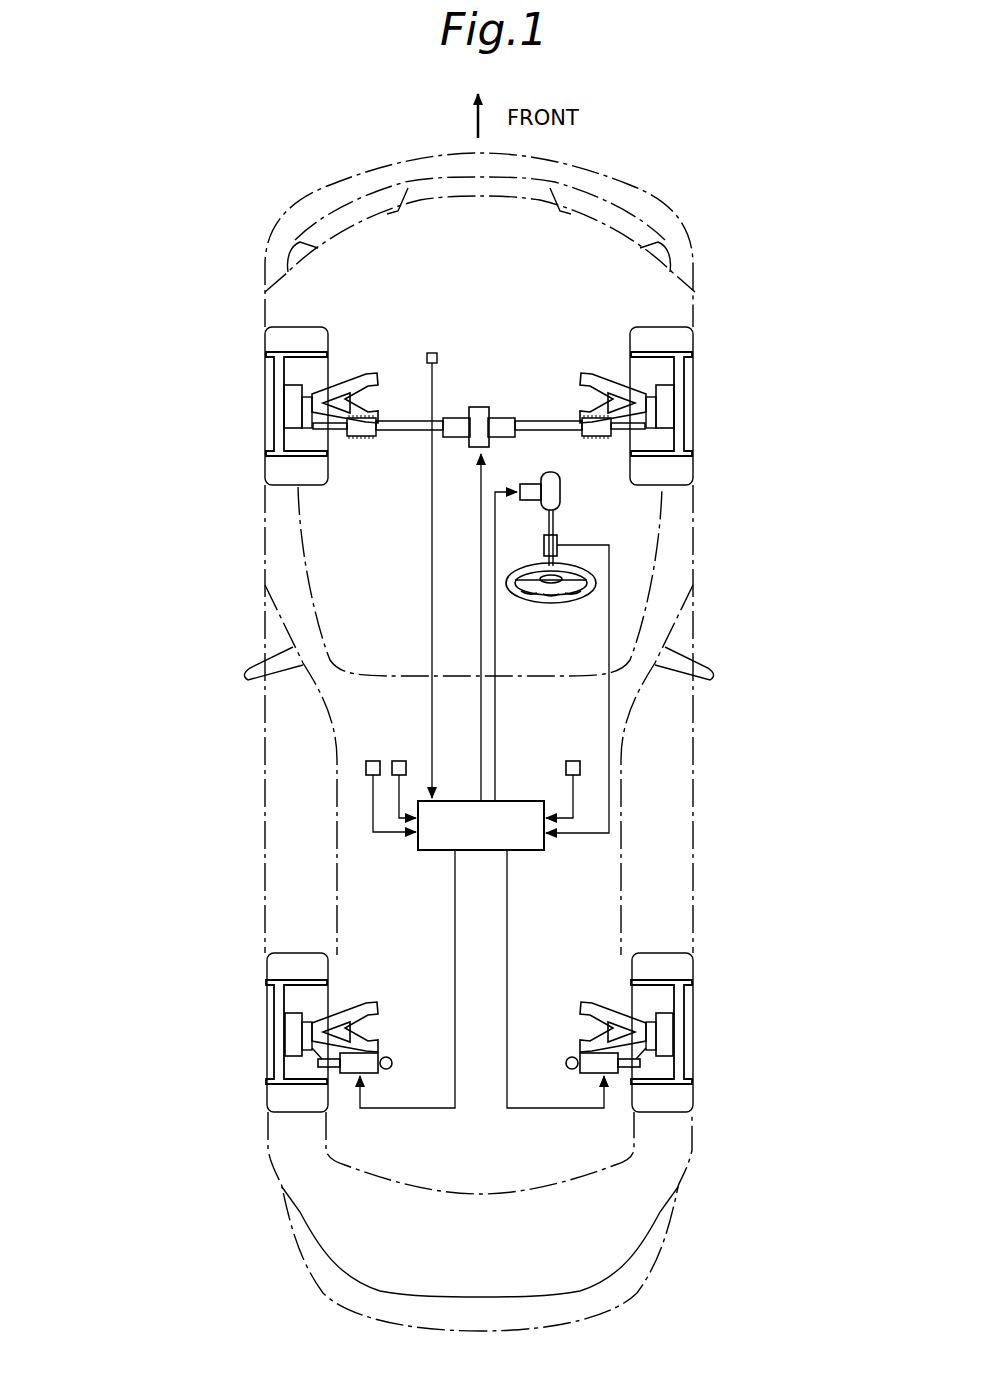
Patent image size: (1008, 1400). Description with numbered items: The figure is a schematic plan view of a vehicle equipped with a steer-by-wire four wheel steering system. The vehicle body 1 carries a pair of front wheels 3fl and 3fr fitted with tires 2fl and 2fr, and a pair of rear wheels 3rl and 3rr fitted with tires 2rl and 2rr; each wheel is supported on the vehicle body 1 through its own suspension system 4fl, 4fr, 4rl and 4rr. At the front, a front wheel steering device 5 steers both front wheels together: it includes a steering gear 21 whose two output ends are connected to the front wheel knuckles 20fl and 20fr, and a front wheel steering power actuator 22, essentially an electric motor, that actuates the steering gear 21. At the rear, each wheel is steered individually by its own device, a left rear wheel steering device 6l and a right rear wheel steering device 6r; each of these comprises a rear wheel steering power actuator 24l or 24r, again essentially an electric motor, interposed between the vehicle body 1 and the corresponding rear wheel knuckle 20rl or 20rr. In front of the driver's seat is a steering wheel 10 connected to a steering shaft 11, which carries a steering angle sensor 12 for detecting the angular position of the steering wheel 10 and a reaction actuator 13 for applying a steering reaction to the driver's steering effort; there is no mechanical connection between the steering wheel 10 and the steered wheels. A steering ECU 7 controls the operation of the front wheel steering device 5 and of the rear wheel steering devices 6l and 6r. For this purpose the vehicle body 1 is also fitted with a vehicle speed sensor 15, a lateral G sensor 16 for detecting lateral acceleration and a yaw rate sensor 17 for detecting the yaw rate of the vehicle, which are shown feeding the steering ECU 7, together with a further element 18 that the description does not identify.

The vehicle body 1 is at (260, 192).
The front left tire 2fl is at (278, 478).
The front right tire 2fr is at (680, 478).
The rear left tire 2rl is at (278, 1108).
The rear right tire 2rr is at (680, 1108).
The front left wheel 3fl is at (272, 368).
The front right wheel 3fr is at (686, 368).
The rear left wheel 3rl is at (272, 1000).
The rear right wheel 3rr is at (686, 1000).
The front left suspension system 4fl is at (290, 384).
The front right suspension system 4fr is at (668, 384).
The rear left suspension system 4rl is at (315, 1056).
The rear right suspension system 4rr is at (643, 1056).
The front wheel steering device 5 is at (514, 392).
The left rear wheel steering device 6l is at (351, 1127).
The right rear wheel steering device 6r is at (610, 1127).
The steering ECU 7 is at (518, 800).
The steering wheel 10 is at (545, 601).
The steering shaft 11 is at (548, 530).
The steering angle sensor 12 is at (560, 540).
The reaction actuator 13 is at (561, 492).
The vehicle speed sensor 15 is at (429, 353).
The lateral G sensor 16 is at (373, 760).
The yaw rate sensor 17 is at (399, 760).
The sensor 18 is at (573, 760).
The front left wheel knuckle 20fl is at (304, 410).
The front right wheel knuckle 20fr is at (654, 410).
The rear left wheel knuckle 20rl is at (300, 1030).
The rear right wheel knuckle 20rr is at (658, 1030).
The steering gear 21 is at (401, 432).
The front wheel steering power actuator 22 is at (480, 406).
The left rear wheel steering power actuator 24l is at (375, 1070).
The right rear wheel steering power actuator 24r is at (586, 1070).